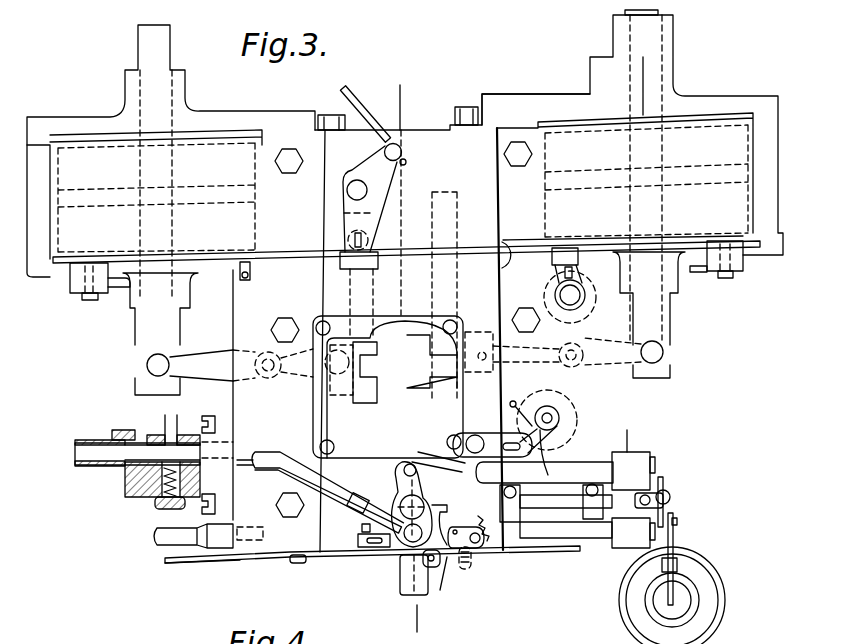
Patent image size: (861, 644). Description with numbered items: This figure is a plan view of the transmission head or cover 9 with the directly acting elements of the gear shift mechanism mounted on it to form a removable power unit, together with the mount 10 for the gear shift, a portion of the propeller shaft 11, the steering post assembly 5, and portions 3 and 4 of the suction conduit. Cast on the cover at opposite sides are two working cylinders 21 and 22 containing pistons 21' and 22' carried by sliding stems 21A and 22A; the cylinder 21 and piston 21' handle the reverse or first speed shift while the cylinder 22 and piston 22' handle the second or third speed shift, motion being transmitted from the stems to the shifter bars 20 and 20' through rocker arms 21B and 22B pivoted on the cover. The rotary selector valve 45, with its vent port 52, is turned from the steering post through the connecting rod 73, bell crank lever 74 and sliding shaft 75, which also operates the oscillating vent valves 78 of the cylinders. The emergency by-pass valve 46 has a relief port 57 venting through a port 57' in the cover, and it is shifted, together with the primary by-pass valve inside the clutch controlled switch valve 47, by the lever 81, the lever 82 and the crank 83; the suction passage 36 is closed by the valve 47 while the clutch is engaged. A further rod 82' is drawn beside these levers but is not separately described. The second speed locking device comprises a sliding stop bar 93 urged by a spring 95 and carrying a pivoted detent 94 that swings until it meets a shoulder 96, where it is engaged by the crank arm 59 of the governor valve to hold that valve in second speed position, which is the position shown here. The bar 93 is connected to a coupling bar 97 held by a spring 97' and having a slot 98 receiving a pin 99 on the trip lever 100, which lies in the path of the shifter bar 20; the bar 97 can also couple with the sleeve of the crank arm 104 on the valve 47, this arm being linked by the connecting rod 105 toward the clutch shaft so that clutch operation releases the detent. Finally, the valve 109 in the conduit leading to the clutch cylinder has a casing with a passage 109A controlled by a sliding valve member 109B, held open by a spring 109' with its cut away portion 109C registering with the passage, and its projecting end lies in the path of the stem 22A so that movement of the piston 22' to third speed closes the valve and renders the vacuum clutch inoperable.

The suction conduit portion 3 is at (156, 537).
The suction conduit branch 4 is at (75, 460).
The steering post assembly 5 is at (412, 350).
The transmission head or cover 9 is at (232, 332).
The gear shift mount 10 is at (313, 410).
The propeller shaft 11 is at (400, 578).
The first and reverse gear shifter rod 20 is at (448, 296).
The second and high gear shifter rod 20' is at (380, 347).
The working cylinder 21 is at (632, 149).
The piston 21' is at (646, 181).
The piston stem 21A is at (640, 157).
The rocker arm 21B is at (636, 385).
The working cylinder 22 is at (171, 183).
The piston 22' is at (156, 197).
The piston stem 22A is at (178, 165).
The rocker arm 22B is at (215, 380).
The suction passage 36 is at (229, 566).
The selector valve 45 is at (555, 296).
The secondary emergency by-pass valve 46 is at (564, 430).
The clutch controlled switch valve 47 is at (433, 506).
The vent port 52 is at (585, 287).
The vent port 57 is at (559, 419).
The cover vent port 57' is at (522, 404).
The crank arm 59 is at (675, 511).
The connecting rod 73 is at (362, 100).
The bell crank lever 74 is at (386, 150).
The sliding shaft 75 is at (367, 190).
The vent valves 78 is at (90, 301).
The lever 81 is at (406, 462).
The lever 82 is at (472, 458).
The connecting rod 82' is at (320, 480).
The crank 83 is at (546, 457).
The sliding stop bar 93 is at (580, 540).
The pivoted detent 94 is at (669, 498).
The spring 95 is at (492, 527).
The shoulder 96 is at (640, 497).
The coupling bar 97 is at (480, 548).
The spring 97' is at (473, 581).
The slot 98 is at (378, 546).
The pin 99 is at (368, 546).
The trip lever 100 is at (362, 528).
The crank arm 104 is at (445, 586).
The connecting rod 105 is at (175, 566).
The clutch cut-off valve 109 is at (153, 464).
The spring 109' is at (137, 511).
The passage 109A is at (150, 433).
The sliding valve member 109B is at (162, 415).
The cut away portion 109C is at (158, 418).